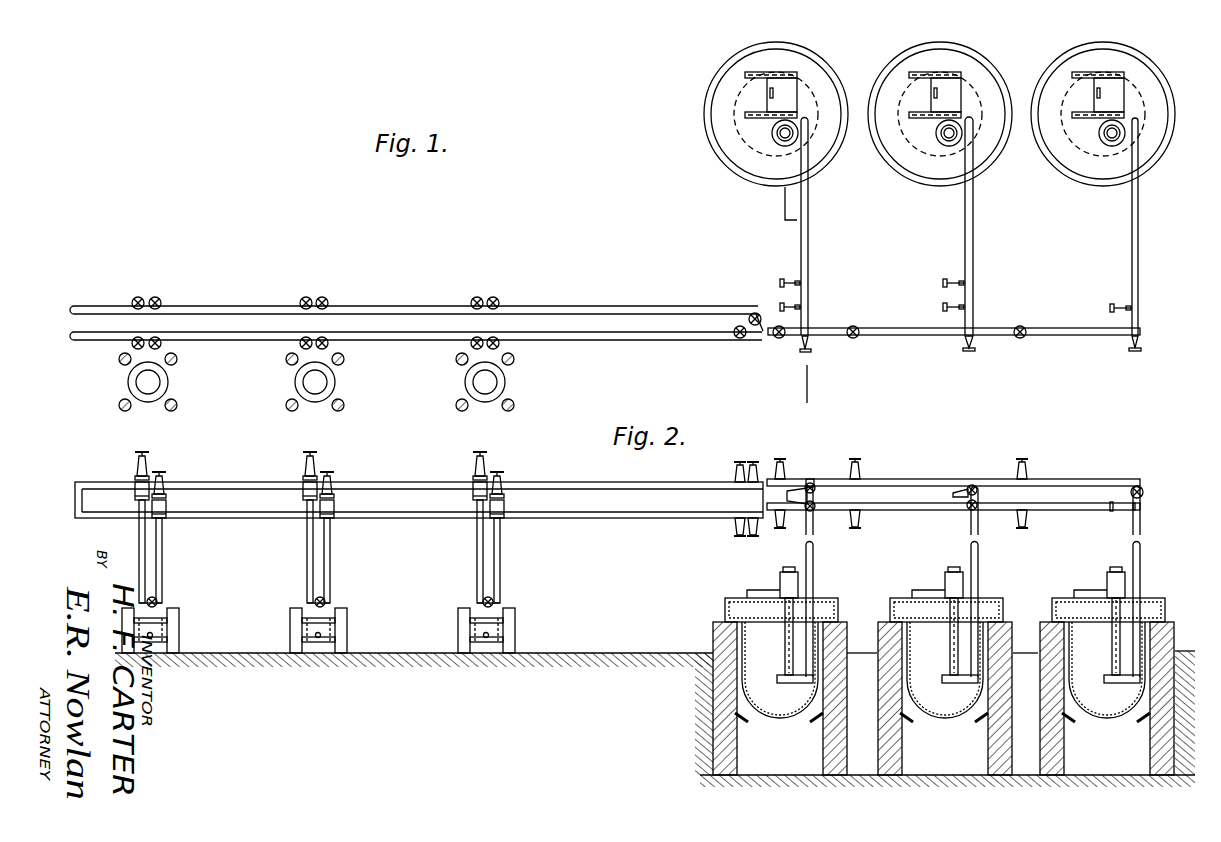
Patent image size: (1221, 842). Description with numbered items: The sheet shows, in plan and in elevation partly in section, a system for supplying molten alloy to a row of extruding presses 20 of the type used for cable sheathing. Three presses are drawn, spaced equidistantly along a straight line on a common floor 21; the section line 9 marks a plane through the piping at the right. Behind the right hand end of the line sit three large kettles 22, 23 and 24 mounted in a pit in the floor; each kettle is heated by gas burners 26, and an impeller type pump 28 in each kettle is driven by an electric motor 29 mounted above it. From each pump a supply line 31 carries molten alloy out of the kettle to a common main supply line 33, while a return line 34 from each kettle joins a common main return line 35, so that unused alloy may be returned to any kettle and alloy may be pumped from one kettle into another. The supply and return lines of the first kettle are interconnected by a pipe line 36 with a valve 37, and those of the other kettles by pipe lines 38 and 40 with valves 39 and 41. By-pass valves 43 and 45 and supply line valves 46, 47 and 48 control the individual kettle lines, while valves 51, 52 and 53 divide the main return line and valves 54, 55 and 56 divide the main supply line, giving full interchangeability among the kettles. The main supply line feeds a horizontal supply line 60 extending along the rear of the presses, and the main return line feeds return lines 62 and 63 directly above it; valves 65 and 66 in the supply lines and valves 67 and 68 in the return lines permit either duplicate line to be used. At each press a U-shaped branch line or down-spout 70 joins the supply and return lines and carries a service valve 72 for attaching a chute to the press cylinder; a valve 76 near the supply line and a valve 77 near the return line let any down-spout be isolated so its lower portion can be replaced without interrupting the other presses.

In FIG. 1, the section line 9 is at (783, 197).
In FIG. 1, the extruding press 20 is at (168, 380).
In FIG. 2, the extruding press 20 is at (180, 637).
In FIG. 2, the floor 21 is at (591, 660).
In FIG. 1, the kettle 22 is at (705, 128).
In FIG. 2, the kettle 22 is at (713, 638).
In FIG. 1, the kettle 23 is at (890, 170).
In FIG. 2, the kettle 23 is at (877, 628).
In FIG. 1, the kettle 24 is at (1052, 170).
In FIG. 2, the kettle 24 is at (1039, 628).
In FIG. 2, the gas burner 26 is at (815, 723).
In FIG. 2, the impeller type pump 28 is at (779, 679).
In FIG. 2, the electric motor 29 is at (781, 580).
In FIG. 2, the kettle supply line 31 is at (814, 567).
In FIG. 2, the main supply line 33 is at (895, 511).
In FIG. 1, the kettle return line 34 is at (809, 256).
In FIG. 2, the kettle return line 34 is at (792, 652).
In FIG. 1, the main return line 35 is at (932, 336).
In FIG. 2, the main return line 35 is at (907, 481).
In FIG. 2, the pipe line 36 is at (814, 510).
In FIG. 1, the valve 37 is at (812, 352).
In FIG. 2, the valve 37 is at (815, 490).
In FIG. 2, the pipe line 38 is at (977, 510).
In FIG. 1, the valve 39 is at (972, 352).
In FIG. 2, the valve 39 is at (976, 486).
In FIG. 2, the pipe line 40 is at (1141, 505).
In FIG. 1, the valve 41 is at (1132, 352).
In FIG. 2, the valve 41 is at (1143, 491).
In FIG. 1, the valve 43 is at (793, 282).
In FIG. 1, the valve 45 is at (958, 280).
In FIG. 1, the valve 46 is at (800, 308).
In FIG. 1, the valve 47 is at (958, 307).
In FIG. 1, the valve 48 is at (1128, 306).
In FIG. 1, the valve 51 is at (774, 338).
In FIG. 2, the valve 51 is at (784, 465).
In FIG. 1, the valve 52 is at (860, 338).
In FIG. 2, the valve 52 is at (861, 470).
In FIG. 1, the valve 53 is at (1022, 338).
In FIG. 2, the valve 53 is at (1028, 470).
In FIG. 2, the valve 54 is at (862, 528).
In FIG. 2, the valve 55 is at (1029, 525).
In FIG. 2, the valve 56 is at (780, 530).
In FIG. 2, the supply line 60 is at (564, 513).
In FIG. 1, the return line 62 is at (381, 341).
In FIG. 2, the return line 62 is at (569, 490).
In FIG. 1, the return line 63 is at (396, 306).
In FIG. 2, the valve 65 is at (735, 527).
In FIG. 2, the valve 66 is at (752, 537).
In FIG. 1, the valve 67 is at (733, 338).
In FIG. 2, the valve 67 is at (735, 469).
In FIG. 1, the valve 68 is at (750, 313).
In FIG. 2, the valve 68 is at (757, 463).
In FIG. 2, the branch line 70 is at (163, 558).
In FIG. 2, the service valve 72 is at (163, 603).
In FIG. 1, the valve 76 is at (159, 340).
In FIG. 2, the valve 76 is at (167, 481).
In FIG. 1, the valve 77 is at (134, 340).
In FIG. 2, the valve 77 is at (135, 466).